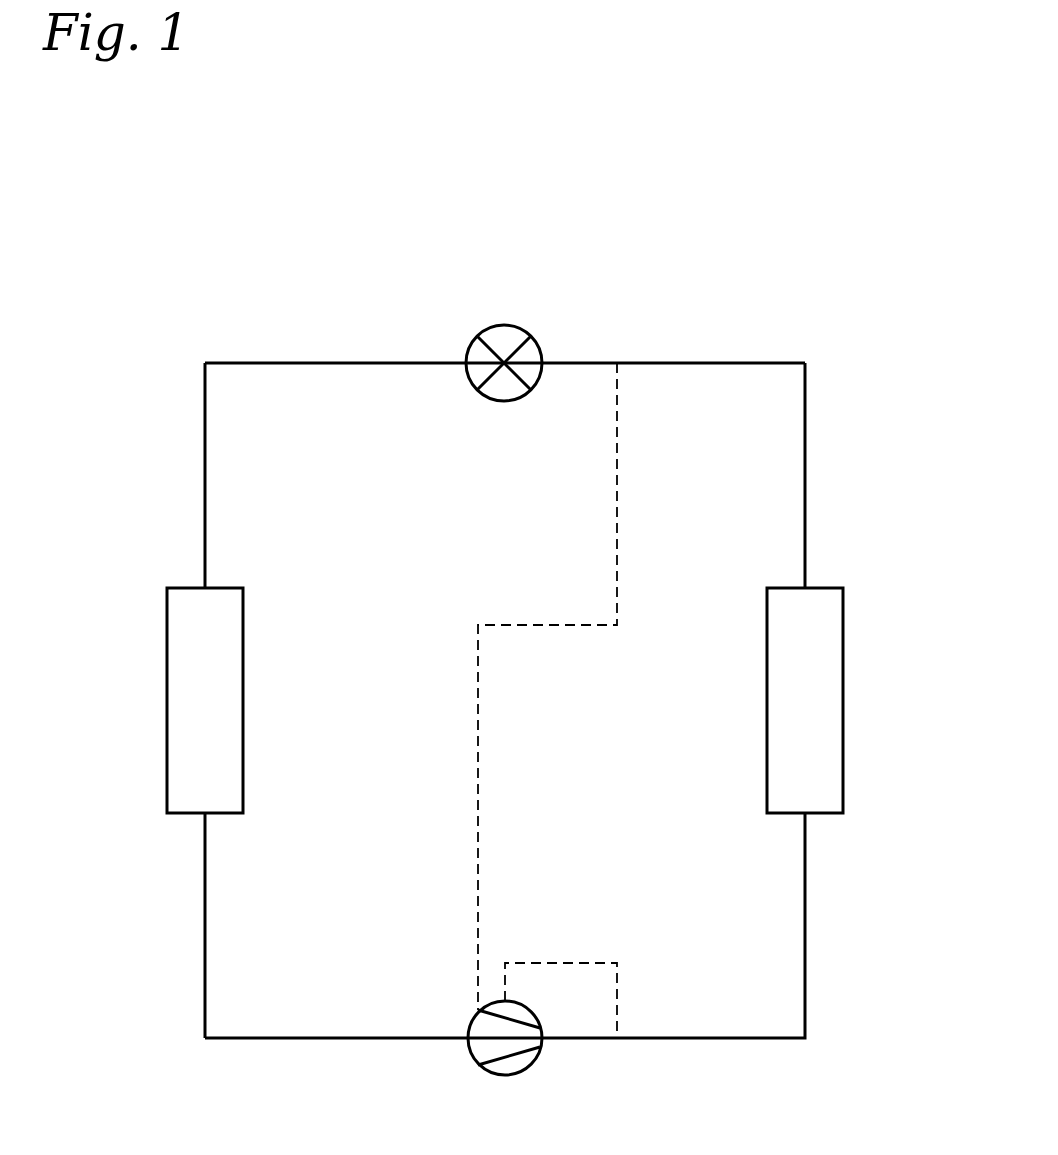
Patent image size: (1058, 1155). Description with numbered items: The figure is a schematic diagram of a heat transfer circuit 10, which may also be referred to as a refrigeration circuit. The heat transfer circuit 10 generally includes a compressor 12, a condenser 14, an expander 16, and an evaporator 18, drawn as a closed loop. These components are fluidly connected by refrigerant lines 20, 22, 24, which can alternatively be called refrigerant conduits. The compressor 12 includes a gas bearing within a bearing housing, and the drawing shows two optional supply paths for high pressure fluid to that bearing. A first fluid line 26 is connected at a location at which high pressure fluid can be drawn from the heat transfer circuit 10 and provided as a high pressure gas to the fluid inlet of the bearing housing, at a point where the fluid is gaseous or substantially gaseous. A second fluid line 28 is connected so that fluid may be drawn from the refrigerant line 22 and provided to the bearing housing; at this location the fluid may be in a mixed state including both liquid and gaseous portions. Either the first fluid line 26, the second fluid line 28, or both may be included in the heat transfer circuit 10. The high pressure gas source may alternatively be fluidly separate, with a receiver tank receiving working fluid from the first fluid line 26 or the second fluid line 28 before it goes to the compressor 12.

The heat transfer circuit 10 is at (680, 230).
The compressor 12 is at (520, 1073).
The condenser 14 is at (823, 588).
The expander 16 is at (487, 325).
The evaporator 18 is at (180, 588).
The refrigerant line 20 is at (700, 1040).
The refrigerant line 22 is at (262, 363).
The refrigerant line 24 is at (204, 942).
The first fluid line 26 is at (540, 963).
The second fluid line 28 is at (478, 783).